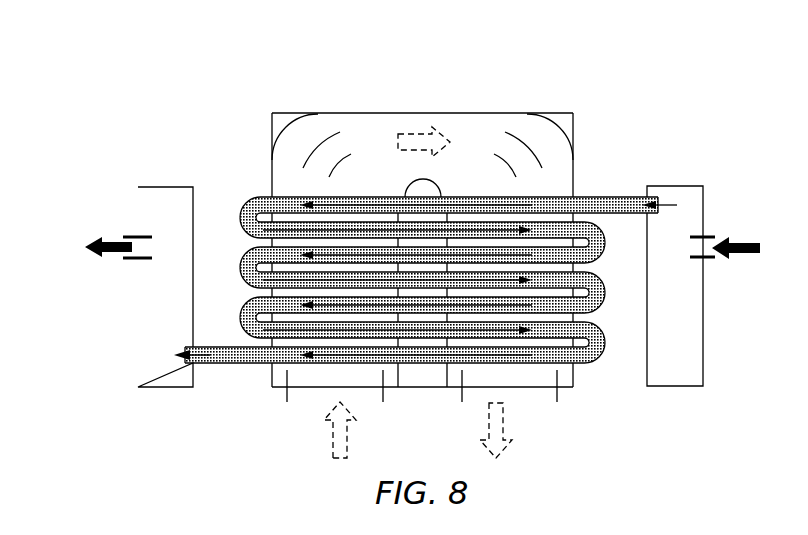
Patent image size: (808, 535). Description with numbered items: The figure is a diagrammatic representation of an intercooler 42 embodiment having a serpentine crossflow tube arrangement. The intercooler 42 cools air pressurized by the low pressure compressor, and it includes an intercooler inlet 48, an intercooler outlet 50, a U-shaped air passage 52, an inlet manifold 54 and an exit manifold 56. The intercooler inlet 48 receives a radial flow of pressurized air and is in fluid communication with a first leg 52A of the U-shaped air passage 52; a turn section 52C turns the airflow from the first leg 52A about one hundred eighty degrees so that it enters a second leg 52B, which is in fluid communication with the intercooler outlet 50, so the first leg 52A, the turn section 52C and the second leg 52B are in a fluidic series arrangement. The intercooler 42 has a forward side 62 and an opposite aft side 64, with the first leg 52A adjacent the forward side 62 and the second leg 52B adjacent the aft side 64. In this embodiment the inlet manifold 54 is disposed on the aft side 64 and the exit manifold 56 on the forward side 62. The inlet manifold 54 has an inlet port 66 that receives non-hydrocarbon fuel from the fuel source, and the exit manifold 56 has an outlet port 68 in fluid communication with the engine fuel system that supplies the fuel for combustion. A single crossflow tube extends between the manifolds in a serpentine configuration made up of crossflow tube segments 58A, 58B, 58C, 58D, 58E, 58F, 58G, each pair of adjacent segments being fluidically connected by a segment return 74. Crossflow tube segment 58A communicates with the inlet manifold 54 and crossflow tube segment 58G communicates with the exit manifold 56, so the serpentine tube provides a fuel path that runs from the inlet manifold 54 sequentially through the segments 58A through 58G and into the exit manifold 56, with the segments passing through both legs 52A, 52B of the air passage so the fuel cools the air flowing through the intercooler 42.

The intercooler 42 is at (603, 82).
The intercooler inlet 48 is at (286, 394).
The intercooler outlet 50 is at (557, 397).
The U-shaped air passage 52 is at (440, 230).
The first leg 52A is at (240, 205).
The second leg 52B is at (560, 315).
The turn section 52C is at (470, 123).
The inlet manifold 54 is at (693, 366).
The exit manifold 56 is at (150, 353).
The crossflow tube segment 58A is at (292, 200).
The crossflow tube segment 58B is at (247, 229).
The crossflow tube segment 58C is at (248, 252).
The crossflow tube segment 58D is at (248, 282).
The crossflow tube segment 58E is at (247, 305).
The crossflow tube segment 58F is at (248, 334).
The crossflow tube segment 58G is at (280, 352).
The forward side 62 is at (248, 125).
The aft side 64 is at (707, 204).
The inlet port 66 is at (715, 258).
The outlet port 68 is at (130, 258).
The segment return 74 is at (598, 275).